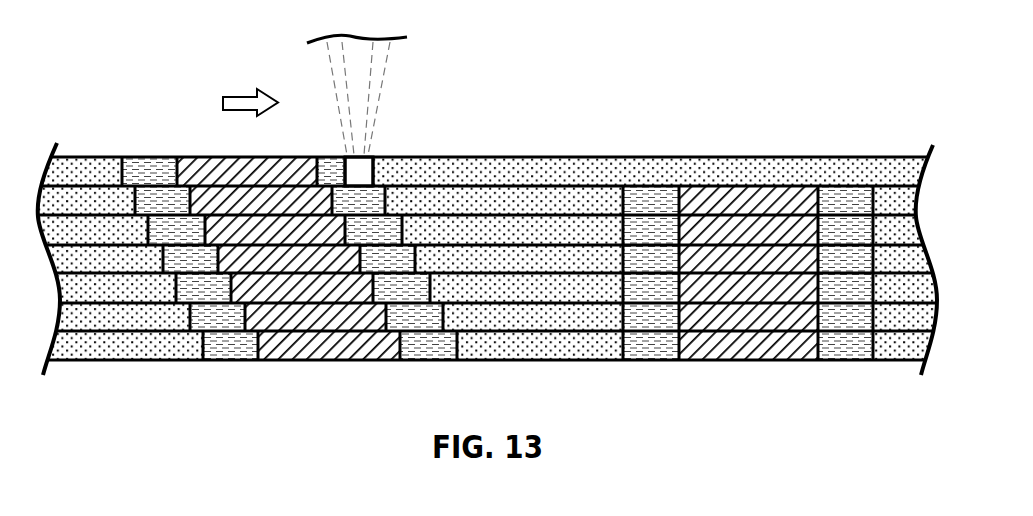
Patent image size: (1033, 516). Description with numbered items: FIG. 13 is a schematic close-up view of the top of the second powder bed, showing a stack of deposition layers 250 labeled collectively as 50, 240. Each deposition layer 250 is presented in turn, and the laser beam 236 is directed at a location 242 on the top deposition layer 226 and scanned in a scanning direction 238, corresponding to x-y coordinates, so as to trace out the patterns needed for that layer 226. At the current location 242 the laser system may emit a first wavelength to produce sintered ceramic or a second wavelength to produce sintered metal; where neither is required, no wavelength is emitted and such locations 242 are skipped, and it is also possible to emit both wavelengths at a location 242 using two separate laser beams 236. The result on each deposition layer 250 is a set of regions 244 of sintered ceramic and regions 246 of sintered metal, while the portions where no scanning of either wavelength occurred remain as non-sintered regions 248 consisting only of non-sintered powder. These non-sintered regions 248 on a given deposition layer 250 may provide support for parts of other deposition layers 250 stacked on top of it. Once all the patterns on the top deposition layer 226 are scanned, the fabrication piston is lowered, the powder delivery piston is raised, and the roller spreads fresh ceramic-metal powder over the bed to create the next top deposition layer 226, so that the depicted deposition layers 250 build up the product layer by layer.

The composite component 50 is at (490, 210).
The composite laminate 240 is at (490, 210).
The top deposition layer 226 is at (704, 170).
The laser beam 236 is at (378, 61).
The scanning direction 238 is at (246, 92).
The location 242 is at (363, 173).
The regions of sintered ceramic 244 is at (229, 350).
The regions of sintered metal 246 is at (329, 350).
The non-sintered regions 248 is at (560, 170).
The deposition layer 250 is at (810, 107).